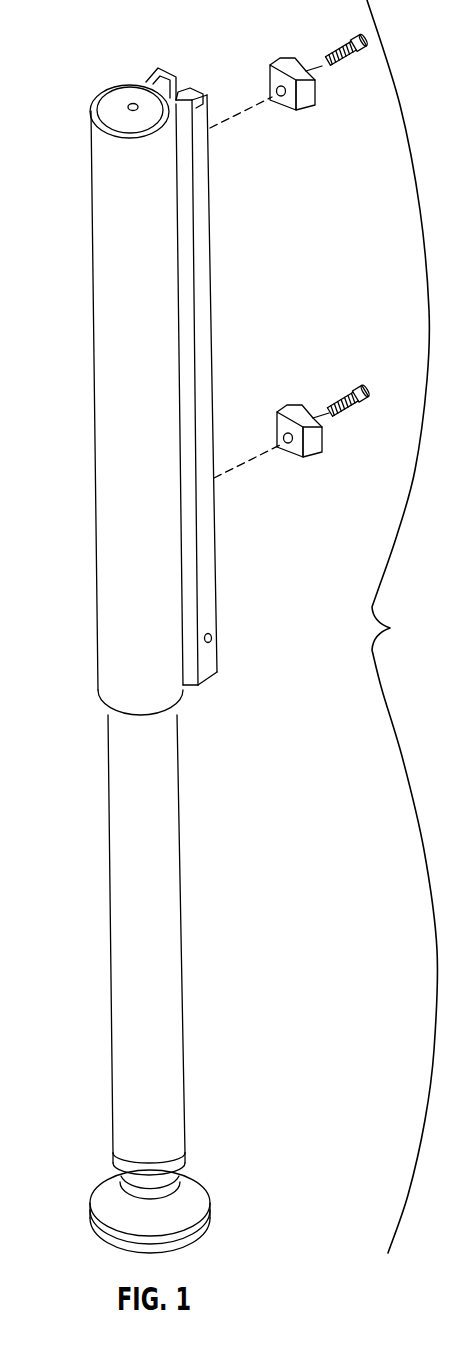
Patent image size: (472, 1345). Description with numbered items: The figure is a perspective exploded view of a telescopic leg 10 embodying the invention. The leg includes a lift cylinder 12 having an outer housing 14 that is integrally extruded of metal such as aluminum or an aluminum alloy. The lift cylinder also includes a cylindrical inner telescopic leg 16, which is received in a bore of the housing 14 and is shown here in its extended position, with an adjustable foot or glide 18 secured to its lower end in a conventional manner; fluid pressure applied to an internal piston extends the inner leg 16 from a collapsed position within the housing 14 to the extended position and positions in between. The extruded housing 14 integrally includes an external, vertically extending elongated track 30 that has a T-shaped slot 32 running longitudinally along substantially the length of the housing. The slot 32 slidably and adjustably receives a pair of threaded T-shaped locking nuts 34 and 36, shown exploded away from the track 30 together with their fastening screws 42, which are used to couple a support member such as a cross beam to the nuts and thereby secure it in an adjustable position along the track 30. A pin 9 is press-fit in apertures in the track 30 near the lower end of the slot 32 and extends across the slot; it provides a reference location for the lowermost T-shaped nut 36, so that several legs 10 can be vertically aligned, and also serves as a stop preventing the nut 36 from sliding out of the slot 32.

The pin 9 is at (212, 638).
The telescopic leg 10 is at (402, 626).
The lift cylinder 12 is at (84, 96).
The outer housing 14 is at (88, 373).
The inner telescopic leg 16 is at (178, 733).
The adjustable foot or glide 18 is at (203, 1178).
The elongated track 30 is at (208, 120).
The T-shaped slot 32 is at (177, 85).
The T-shaped locking nut 34 is at (280, 60).
The T-shaped locking nut 36 is at (288, 410).
The fastening screws 42 is at (372, 48).